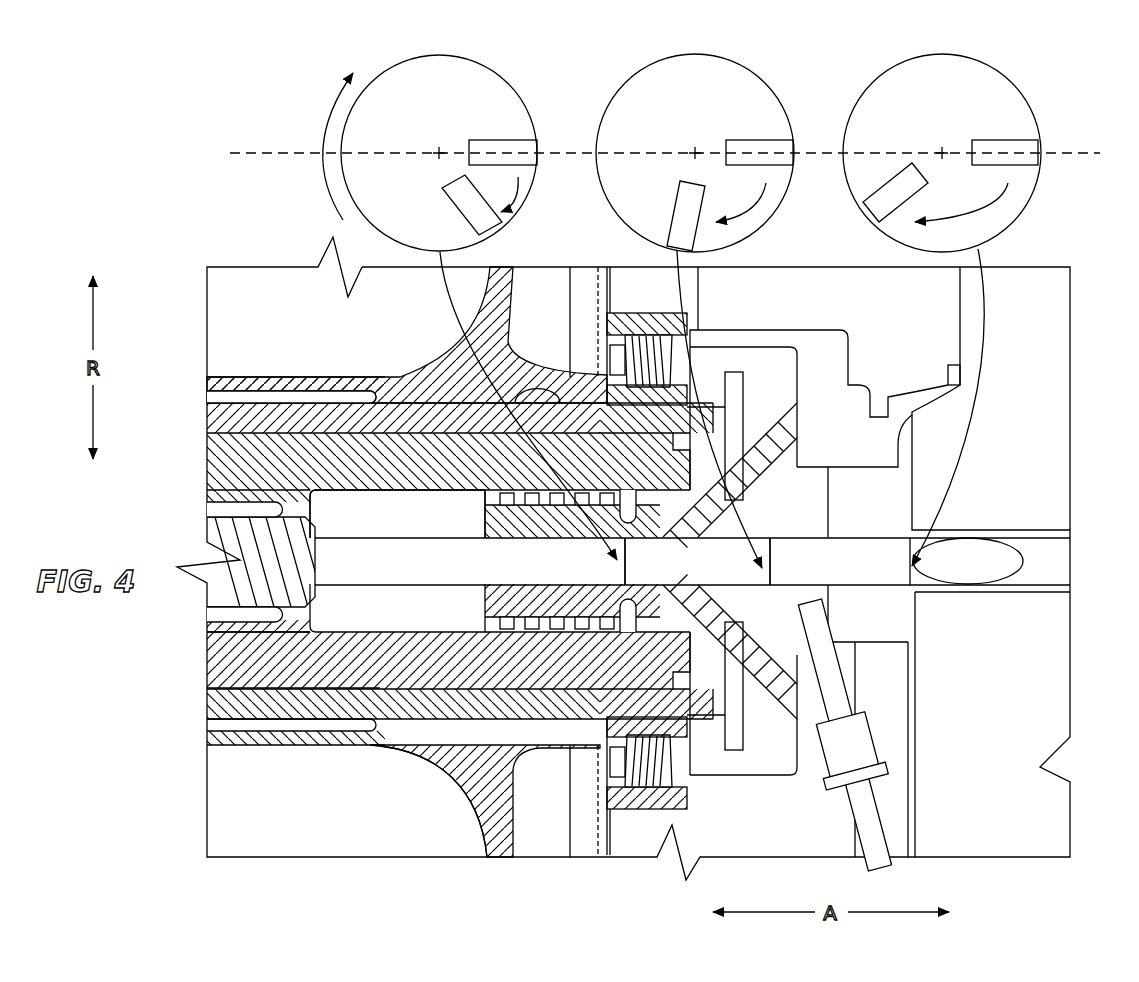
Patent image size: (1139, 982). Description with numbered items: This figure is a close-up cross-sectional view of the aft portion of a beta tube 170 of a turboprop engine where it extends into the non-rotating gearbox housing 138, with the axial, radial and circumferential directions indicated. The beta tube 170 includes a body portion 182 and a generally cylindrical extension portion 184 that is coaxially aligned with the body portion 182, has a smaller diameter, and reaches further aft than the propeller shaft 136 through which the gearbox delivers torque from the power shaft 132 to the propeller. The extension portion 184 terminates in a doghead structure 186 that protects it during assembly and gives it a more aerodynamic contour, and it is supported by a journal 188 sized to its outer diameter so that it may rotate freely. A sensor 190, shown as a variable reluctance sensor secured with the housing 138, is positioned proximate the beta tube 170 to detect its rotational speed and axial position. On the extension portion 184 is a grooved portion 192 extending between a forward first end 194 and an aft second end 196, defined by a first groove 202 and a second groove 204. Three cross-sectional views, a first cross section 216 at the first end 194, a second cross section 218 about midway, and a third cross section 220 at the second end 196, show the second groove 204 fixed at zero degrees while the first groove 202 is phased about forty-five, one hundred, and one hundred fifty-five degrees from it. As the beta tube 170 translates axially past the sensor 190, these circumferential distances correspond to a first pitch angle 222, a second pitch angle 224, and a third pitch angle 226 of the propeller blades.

The power shaft 132 is at (1050, 527).
The propeller shaft 136 is at (297, 458).
The gearbox housing 138 is at (1042, 372).
The beta tube 170 is at (347, 525).
The body portion 182 is at (252, 580).
The extension portion 184 is at (340, 685).
The doghead structure 186 is at (1002, 603).
The journal 188 is at (460, 770).
The sensor 190 is at (850, 806).
The grooved portion 192 is at (790, 512).
The first end 194 is at (645, 596).
The second end 196 is at (916, 600).
The first groove 202 is at (503, 140).
The second groove 204 is at (678, 226).
The first cross section 216 is at (430, 48).
The second cross section 218 is at (696, 48).
The third cross section 220 is at (941, 48).
The first pitch angle 222 is at (519, 187).
The second pitch angle 224 is at (766, 185).
The third pitch angle 226 is at (1010, 186).